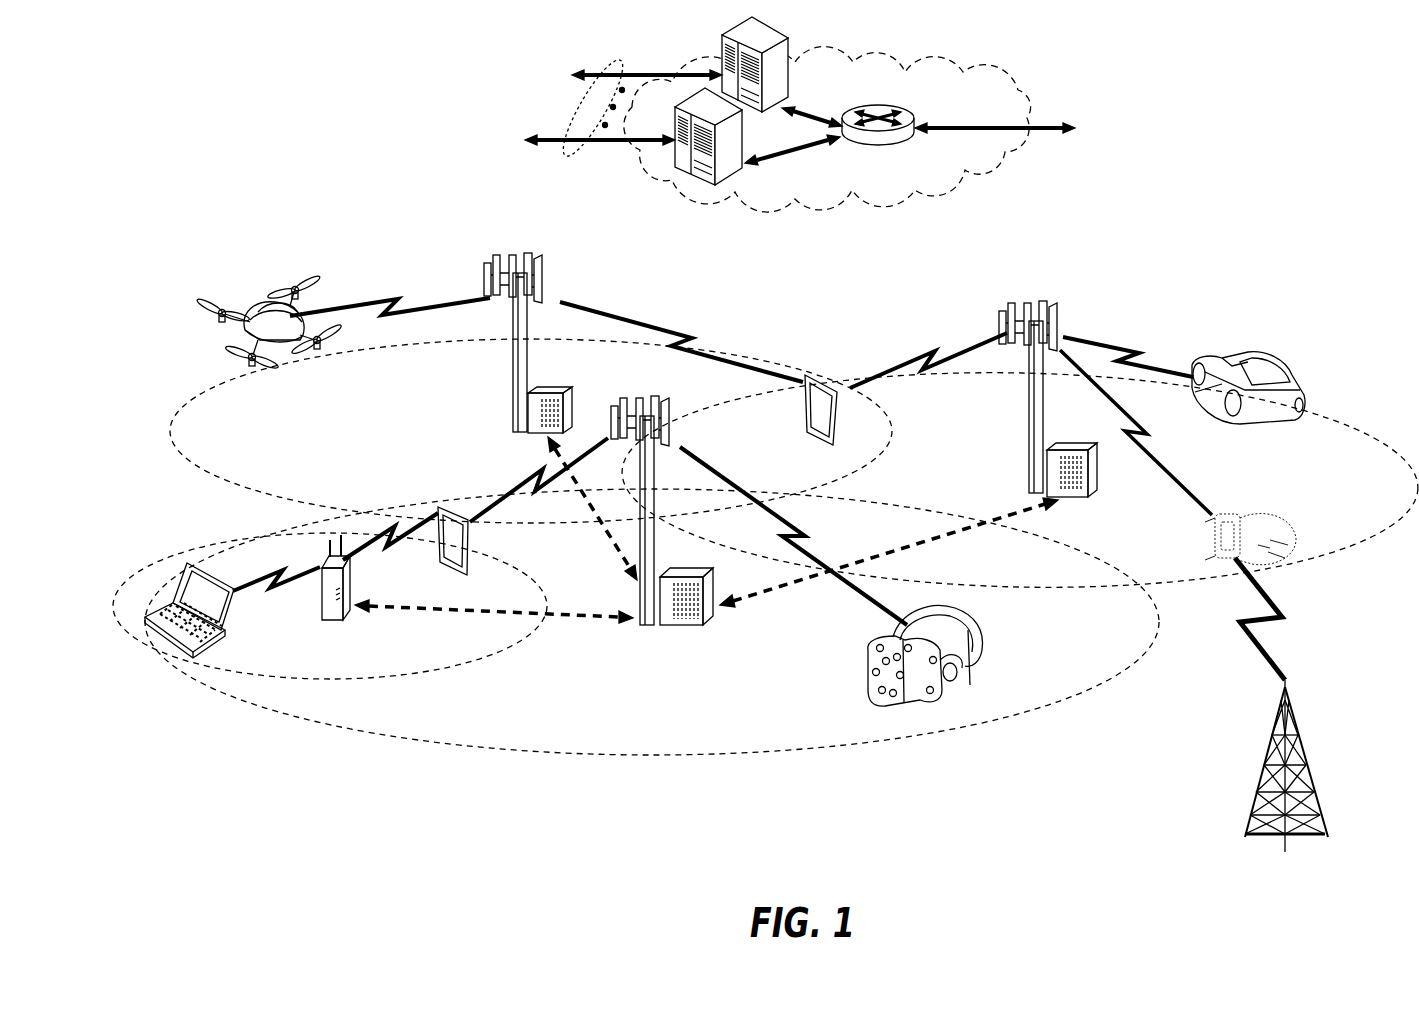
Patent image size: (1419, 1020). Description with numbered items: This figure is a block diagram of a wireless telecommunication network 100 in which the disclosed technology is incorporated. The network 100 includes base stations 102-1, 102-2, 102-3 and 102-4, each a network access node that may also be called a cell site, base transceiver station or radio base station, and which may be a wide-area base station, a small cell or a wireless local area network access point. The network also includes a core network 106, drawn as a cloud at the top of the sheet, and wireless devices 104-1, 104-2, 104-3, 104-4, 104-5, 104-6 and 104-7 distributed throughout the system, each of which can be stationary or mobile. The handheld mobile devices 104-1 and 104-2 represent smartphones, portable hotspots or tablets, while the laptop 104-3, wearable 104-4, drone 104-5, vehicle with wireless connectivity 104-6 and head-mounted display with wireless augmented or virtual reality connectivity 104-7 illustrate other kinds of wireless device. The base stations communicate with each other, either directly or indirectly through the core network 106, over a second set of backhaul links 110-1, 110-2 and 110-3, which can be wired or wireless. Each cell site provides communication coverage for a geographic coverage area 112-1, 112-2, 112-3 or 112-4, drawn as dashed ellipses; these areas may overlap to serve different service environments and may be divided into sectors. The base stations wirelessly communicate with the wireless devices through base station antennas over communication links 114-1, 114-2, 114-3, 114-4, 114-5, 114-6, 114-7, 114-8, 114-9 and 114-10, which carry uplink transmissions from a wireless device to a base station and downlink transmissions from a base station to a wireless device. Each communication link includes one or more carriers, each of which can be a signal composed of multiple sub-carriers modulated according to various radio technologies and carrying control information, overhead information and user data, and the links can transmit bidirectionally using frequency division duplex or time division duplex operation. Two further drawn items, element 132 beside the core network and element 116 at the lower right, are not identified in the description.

The wireless telecommunication network 100 is at (1322, 114).
The core network 106 is at (910, 200).
The network interface / links 132 is at (605, 162).
The base station 102-1 is at (647, 628).
The base station 102-2 is at (514, 385).
The base station 102-3 is at (1028, 415).
The base station 102-4 is at (322, 613).
The handheld mobile device 104-1 is at (470, 558).
The handheld mobile device 104-2 is at (793, 412).
The laptop 104-3 is at (172, 652).
The wearable 104-4 is at (1232, 520).
The drone 104-5 is at (297, 345).
The vehicle with wireless connectivity 104-6 is at (1275, 370).
The head-mounted display 104-7 is at (977, 643).
The backhaul link 110-1 is at (388, 612).
The backhaul link 110-2 is at (950, 538).
The backhaul link 110-3 is at (610, 537).
The geographic coverage area 112-1 is at (573, 755).
The geographic coverage area 112-2 is at (452, 668).
The geographic coverage area 112-3 is at (233, 488).
The geographic coverage area 112-4 is at (1322, 410).
The communication link 114-1 is at (797, 538).
The communication link 114-2 is at (525, 478).
The communication link 114-3 is at (253, 590).
The communication link 114-4 is at (387, 558).
The communication link 114-5 is at (398, 300).
The communication link 114-6 is at (685, 340).
The communication link 114-7 is at (925, 355).
The communication link 114-8 is at (1160, 442).
The communication link 114-9 is at (1130, 345).
The communication link 114-10 is at (1267, 622).
The satellite/broadcast tower 116 is at (1300, 747).